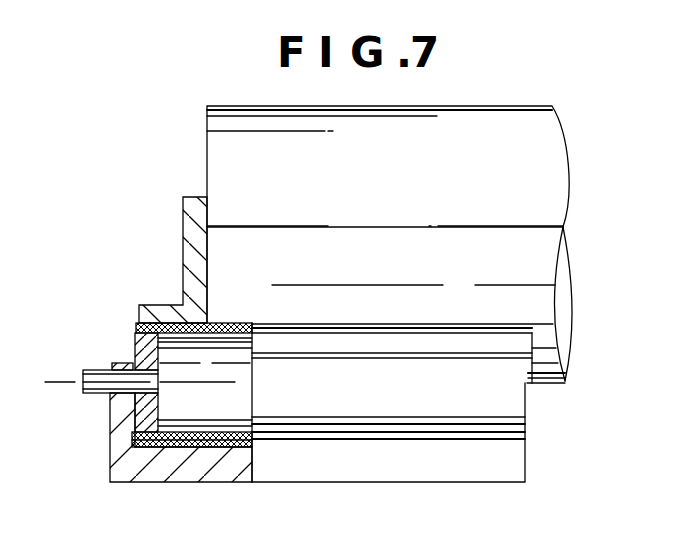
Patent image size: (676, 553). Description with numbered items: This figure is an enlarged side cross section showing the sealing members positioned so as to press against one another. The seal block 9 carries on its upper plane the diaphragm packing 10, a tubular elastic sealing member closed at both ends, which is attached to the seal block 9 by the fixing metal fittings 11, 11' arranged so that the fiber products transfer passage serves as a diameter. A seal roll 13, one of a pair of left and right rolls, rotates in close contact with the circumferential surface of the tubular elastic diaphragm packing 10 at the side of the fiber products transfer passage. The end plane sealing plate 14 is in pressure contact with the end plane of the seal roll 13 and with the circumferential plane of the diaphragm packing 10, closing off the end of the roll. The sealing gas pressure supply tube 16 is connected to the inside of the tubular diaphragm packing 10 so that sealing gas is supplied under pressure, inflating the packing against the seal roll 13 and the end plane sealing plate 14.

The seal block 9 is at (144, 498).
The diaphragm packing 10 is at (250, 325).
The fixing metal fitting 11 is at (364, 475).
The fixing metal fitting 11' is at (318, 357).
The seal roll 13 is at (207, 132).
The end plane sealing plate 14 is at (183, 242).
The sealing gas pressure supply tube 16 is at (97, 370).